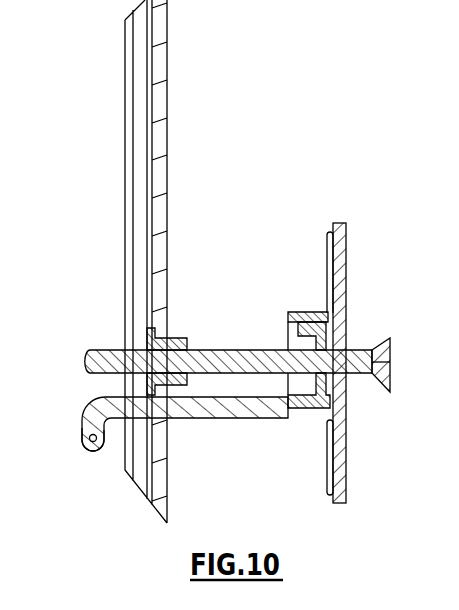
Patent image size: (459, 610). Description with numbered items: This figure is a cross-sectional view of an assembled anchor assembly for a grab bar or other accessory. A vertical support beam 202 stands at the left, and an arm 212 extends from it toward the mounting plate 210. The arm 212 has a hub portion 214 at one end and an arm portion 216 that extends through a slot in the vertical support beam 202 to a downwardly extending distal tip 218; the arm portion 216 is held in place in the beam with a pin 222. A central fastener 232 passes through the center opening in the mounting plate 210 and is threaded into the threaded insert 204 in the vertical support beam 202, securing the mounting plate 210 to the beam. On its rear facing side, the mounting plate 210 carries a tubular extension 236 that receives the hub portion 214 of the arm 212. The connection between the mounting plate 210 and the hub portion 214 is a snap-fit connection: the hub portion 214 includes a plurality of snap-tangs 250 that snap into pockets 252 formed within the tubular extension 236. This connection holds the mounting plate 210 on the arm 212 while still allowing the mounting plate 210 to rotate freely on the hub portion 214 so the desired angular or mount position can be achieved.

The vertical support beam 202 is at (160, 126).
The threaded insert 204 is at (175, 345).
The mounting plate 210 is at (347, 270).
The arm 212 is at (290, 420).
The hub portion 214 is at (298, 338).
The arm portion 216 is at (217, 420).
The distal tip 218 is at (93, 442).
The pin 222 is at (90, 442).
The central fastener 232 is at (372, 342).
The tubular extension 236 is at (300, 313).
The snap-tangs 250 is at (329, 316).
The pockets 252 is at (328, 422).